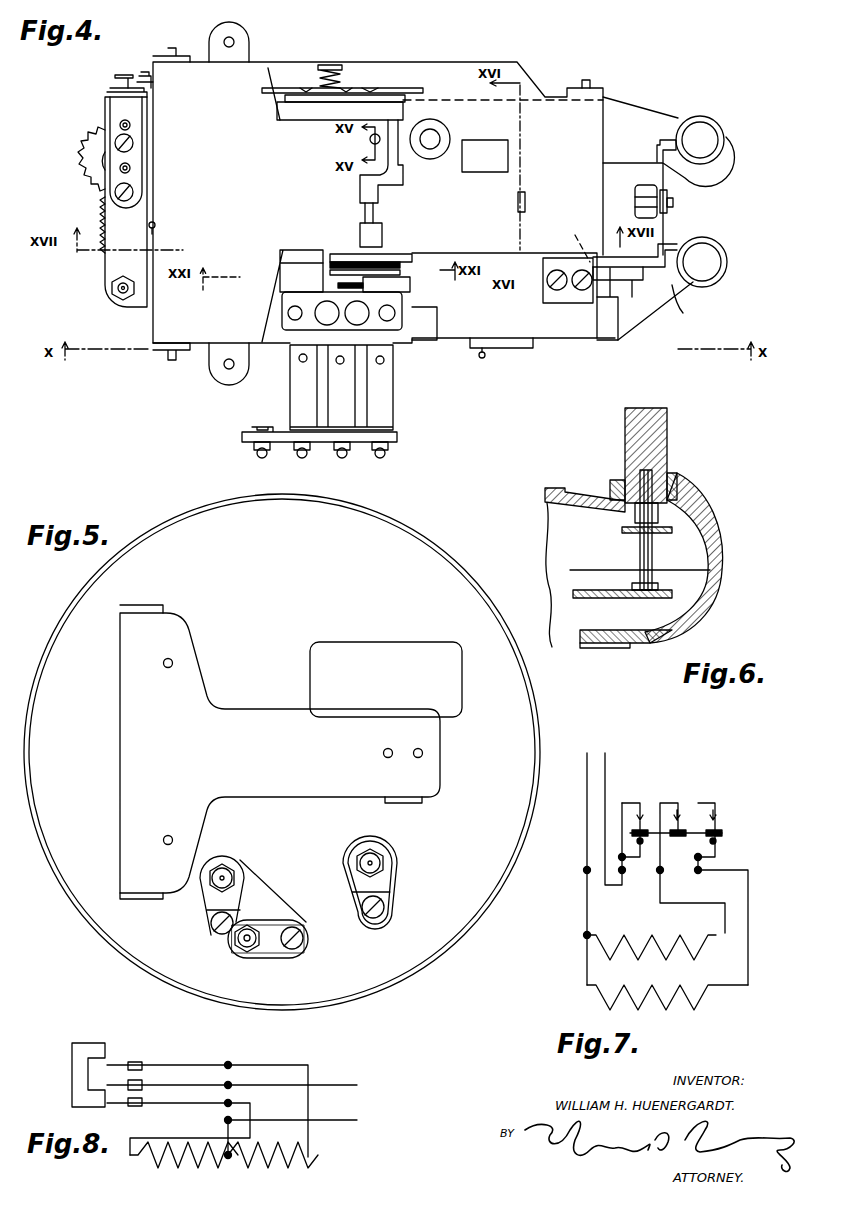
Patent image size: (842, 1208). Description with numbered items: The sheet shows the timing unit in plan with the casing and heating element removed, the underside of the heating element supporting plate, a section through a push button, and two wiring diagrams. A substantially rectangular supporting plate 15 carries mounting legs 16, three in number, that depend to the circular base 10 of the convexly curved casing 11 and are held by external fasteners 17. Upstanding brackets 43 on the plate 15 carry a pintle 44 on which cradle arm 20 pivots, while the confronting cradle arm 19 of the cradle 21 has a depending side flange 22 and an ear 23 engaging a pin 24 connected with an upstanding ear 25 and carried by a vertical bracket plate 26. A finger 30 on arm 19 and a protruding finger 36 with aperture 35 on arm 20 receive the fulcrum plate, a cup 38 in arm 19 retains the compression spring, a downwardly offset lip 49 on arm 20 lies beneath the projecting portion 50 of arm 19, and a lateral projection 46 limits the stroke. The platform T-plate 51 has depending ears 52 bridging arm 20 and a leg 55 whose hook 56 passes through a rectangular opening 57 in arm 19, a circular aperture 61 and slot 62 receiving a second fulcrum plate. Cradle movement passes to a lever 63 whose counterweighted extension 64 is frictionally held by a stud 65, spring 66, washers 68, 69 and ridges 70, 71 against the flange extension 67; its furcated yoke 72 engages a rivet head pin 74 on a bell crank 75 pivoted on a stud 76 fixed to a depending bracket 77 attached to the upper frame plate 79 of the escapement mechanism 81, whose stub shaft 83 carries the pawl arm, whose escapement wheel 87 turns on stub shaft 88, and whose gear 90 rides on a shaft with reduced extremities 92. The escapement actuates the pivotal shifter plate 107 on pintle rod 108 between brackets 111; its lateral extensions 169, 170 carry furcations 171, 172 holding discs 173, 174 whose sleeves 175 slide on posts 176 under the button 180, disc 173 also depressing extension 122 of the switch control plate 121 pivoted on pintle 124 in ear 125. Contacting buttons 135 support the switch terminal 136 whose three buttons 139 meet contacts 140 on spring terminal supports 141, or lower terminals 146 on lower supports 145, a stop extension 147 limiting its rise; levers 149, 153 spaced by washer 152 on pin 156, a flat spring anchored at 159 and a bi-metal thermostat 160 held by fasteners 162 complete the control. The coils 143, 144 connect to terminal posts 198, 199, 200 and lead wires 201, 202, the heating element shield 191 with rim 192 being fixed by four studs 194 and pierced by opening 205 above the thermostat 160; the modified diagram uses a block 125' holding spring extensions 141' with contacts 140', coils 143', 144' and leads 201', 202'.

In FIG. 6, the circular base 10 is at (586, 648).
In FIG. 6, the casing 11 is at (724, 607).
In FIG. 4, the supporting plate 15 is at (646, 108).
In FIG. 6, the supporting plate 15 is at (590, 594).
In FIG. 4, the mounting legs 16 is at (236, 34).
In FIG. 4, the external fasteners 17 is at (228, 34).
In FIG. 4, the cradle arm 19 is at (566, 160).
In FIG. 4, the cradle arm 20 is at (237, 175).
In FIG. 4, the cradle 21 is at (326, 156).
In FIG. 4, the depending side flange 22 is at (520, 113).
In FIG. 4, the ear 23 is at (575, 232).
In FIG. 4, the pin 24 is at (592, 80).
In FIG. 4, the upstanding ear 25 is at (605, 88).
In FIG. 4, the vertical bracket plate 26 is at (383, 248).
In FIG. 4, the finger 30 is at (398, 135).
In FIG. 4, the aperture 35 is at (392, 120).
In FIG. 4, the protruding finger 36 is at (370, 183).
In FIG. 4, the cup 38 is at (432, 156).
In FIG. 4, the upstanding brackets 43 is at (206, 204).
In FIG. 4, the pintle 44 is at (170, 56).
In FIG. 4, the projection 46 is at (440, 255).
In FIG. 4, the downwardly offset lip 49 is at (363, 219).
In FIG. 4, the projecting portion 50 is at (383, 216).
In FIG. 5, the platform T-plate 51 is at (320, 723).
In FIG. 5, the depending ears 52 is at (160, 609).
In FIG. 5, the leg 55 is at (437, 762).
In FIG. 5, the depending hook 56 is at (406, 805).
In FIG. 4, the rectangular opening 57 is at (506, 160).
In FIG. 5, the circular aperture 61 is at (418, 748).
In FIG. 4, the slot 62 is at (527, 200).
In FIG. 4, the lever 63 is at (268, 84).
In FIG. 4, the counterweighted extension 64 is at (418, 88).
In FIG. 4, the stud 65 is at (331, 65).
In FIG. 4, the spring 66 is at (315, 88).
In FIG. 4, the flange extension 67 is at (304, 121).
In FIG. 4, the washer 68 is at (348, 88).
In FIG. 4, the washer 69 is at (342, 104).
In FIG. 4, the circumferential ridge 70 is at (372, 88).
In FIG. 4, the circumferential ridge 71 is at (292, 88).
In FIG. 4, the furcated yoke 72 is at (152, 84).
In FIG. 4, the rivet head pin 74 is at (146, 70).
In FIG. 4, the bell crank 75 is at (112, 90).
In FIG. 4, the rivet head stud 76 is at (122, 75).
In FIG. 4, the depending bracket 77 is at (107, 103).
In FIG. 4, the upper horizontal frame plate 79 is at (113, 265).
In FIG. 4, the escapement mechanism 81 is at (126, 315).
In FIG. 4, the stub shaft 83 is at (130, 125).
In FIG. 4, the escapement wheel 87 is at (90, 160).
In FIG. 4, the stub shaft 88 is at (130, 168).
In FIG. 4, the gear 90 is at (95, 216).
In FIG. 4, the reduced extremities 92 is at (156, 234).
In FIG. 4, the pivotal plate 107 is at (620, 178).
In FIG. 4, the pintle rod 108 is at (675, 201).
In FIG. 4, the upstanding bracket 111 is at (669, 190).
In FIG. 4, the switch control plate 121 is at (528, 348).
In FIG. 4, the switch control plate extension 122 is at (630, 323).
In FIG. 4, the pintle 124 is at (485, 358).
In FIG. 4, the upstanding ear 125 is at (460, 369).
In FIG. 4, the contacting buttons 135 is at (322, 313).
In FIG. 4, the contacting terminal 136 is at (303, 358).
In FIG. 7, the contacting buttons 139 is at (680, 830).
In FIG. 4, the contacts 140 is at (319, 369).
In FIG. 7, the contacts 140 is at (693, 892).
In FIG. 4, the spring terminal supports 141 is at (336, 425).
In FIG. 7, the heating coil 143 is at (667, 1011).
In FIG. 7, the warming coil 144 is at (651, 932).
In FIG. 7, the lower spring terminal supports 145 is at (626, 872).
In FIG. 7, the lower terminals 146 is at (717, 842).
In FIG. 4, the terminal stop extension 147 is at (310, 255).
In FIG. 4, the lever 149 is at (328, 273).
In FIG. 4, the washer 152 is at (290, 264).
In FIG. 4, the lever 153 is at (412, 268).
In FIG. 4, the rivet head pin 156 is at (405, 293).
In FIG. 4, the flat spring anchorage 159 is at (413, 282).
In FIG. 4, the bi-metal thermostat 160 is at (504, 296).
In FIG. 4, the fasteners 162 is at (582, 300).
In FIG. 4, the lateral extension 169 is at (683, 300).
In FIG. 4, the lateral extension 170 is at (665, 142).
In FIG. 4, the furcation 171 is at (690, 240).
In FIG. 4, the furcation 172 is at (676, 125).
In FIG. 4, the disc 173 is at (727, 258).
In FIG. 4, the disc 174 is at (725, 134).
In FIG. 6, the disc 174 is at (622, 533).
In FIG. 6, the sleeves 175 is at (670, 476).
In FIG. 6, the posts 176 is at (652, 556).
In FIG. 6, the warming coil button 180 is at (660, 425).
In FIG. 5, the heating element shield 191 is at (455, 564).
In FIG. 5, the peripheral rim 192 is at (473, 581).
In FIG. 5, the studs 194 is at (171, 659).
In FIG. 5, the terminal post 198 is at (222, 878).
In FIG. 5, the terminal post 199 is at (360, 860).
In FIG. 5, the terminal post 200 is at (250, 936).
In FIG. 7, the lead wire 201 is at (575, 848).
In FIG. 7, the lead wire 202 is at (613, 798).
In FIG. 5, the opening 205 is at (370, 647).
In FIG. 8, the block 125' is at (75, 1058).
In FIG. 8, the spring extensions 141' is at (232, 1089).
In FIG. 8, the terminal contacts 140' is at (161, 1071).
In FIG. 8, the lead 202' is at (306, 1067).
In FIG. 8, the lead 201' is at (314, 1129).
In FIG. 8, the heating coil 143' is at (184, 1160).
In FIG. 8, the warming coil 144' is at (288, 1160).